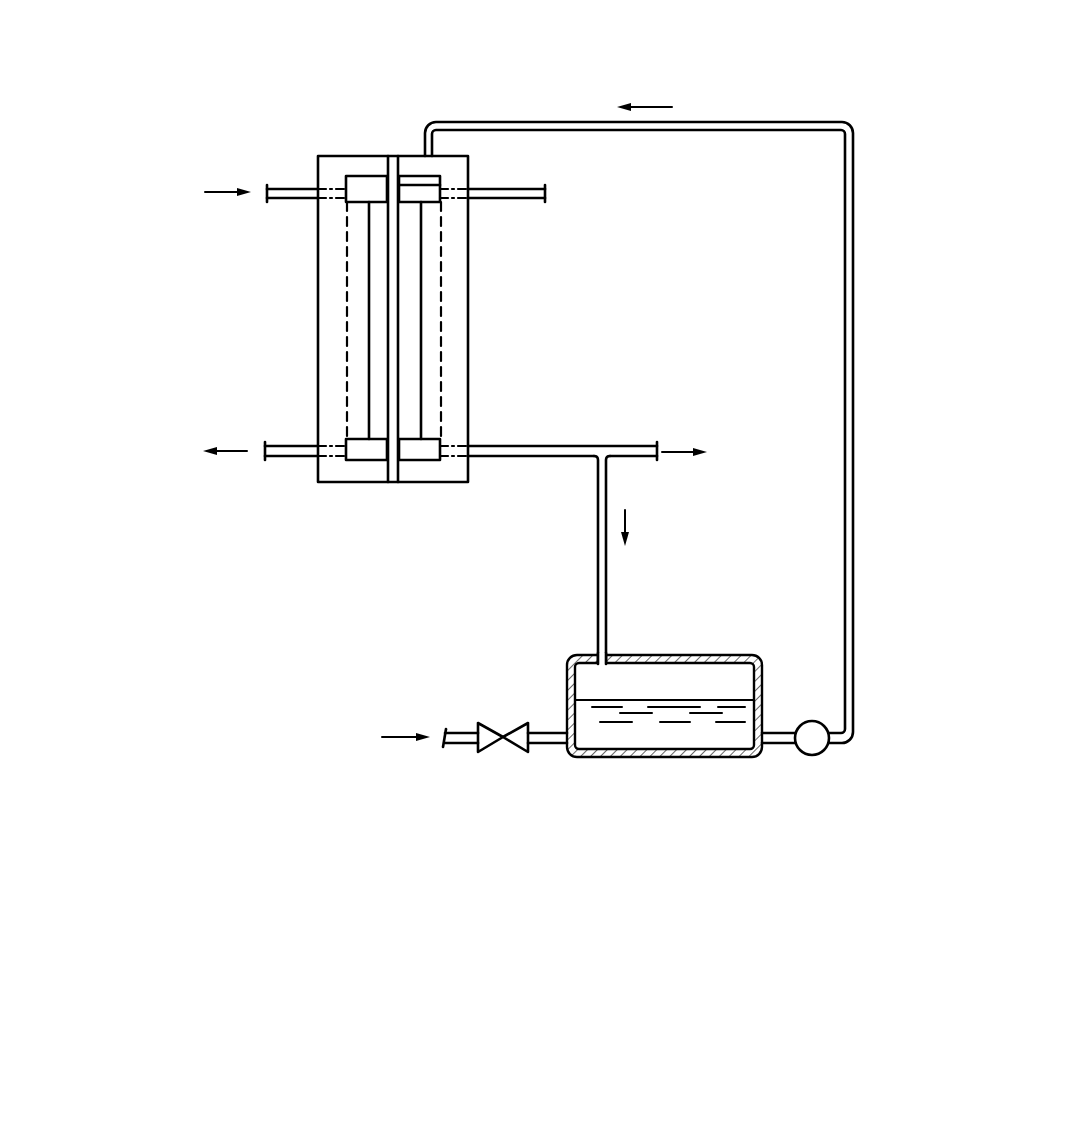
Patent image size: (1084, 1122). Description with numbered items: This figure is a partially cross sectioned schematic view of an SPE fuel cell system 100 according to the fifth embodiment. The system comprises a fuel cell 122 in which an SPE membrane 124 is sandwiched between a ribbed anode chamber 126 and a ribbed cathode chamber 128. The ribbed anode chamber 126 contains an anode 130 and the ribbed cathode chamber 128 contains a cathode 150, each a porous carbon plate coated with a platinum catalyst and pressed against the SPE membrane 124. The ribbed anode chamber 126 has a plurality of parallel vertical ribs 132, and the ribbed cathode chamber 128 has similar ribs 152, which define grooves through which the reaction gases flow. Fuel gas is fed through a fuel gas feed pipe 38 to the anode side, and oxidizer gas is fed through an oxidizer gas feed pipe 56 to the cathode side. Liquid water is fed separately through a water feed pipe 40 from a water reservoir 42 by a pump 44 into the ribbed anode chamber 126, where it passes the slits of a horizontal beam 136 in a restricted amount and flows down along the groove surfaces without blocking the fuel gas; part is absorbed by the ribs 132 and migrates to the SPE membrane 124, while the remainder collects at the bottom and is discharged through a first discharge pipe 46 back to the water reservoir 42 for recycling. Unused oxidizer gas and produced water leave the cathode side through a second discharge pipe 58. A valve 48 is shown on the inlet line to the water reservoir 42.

The SPE fuel cell system 100 is at (569, 98).
The water feed pipe 40 is at (738, 123).
The fuel cell 122 is at (280, 262).
The SPE membrane 124 is at (390, 156).
The horizontal beam 136 is at (412, 184).
The oxidizer gas feed pipe 56 is at (294, 188).
The fuel gas feed pipe 38 is at (510, 199).
The ribbed cathode chamber 128 is at (330, 300).
The ribbed anode chamber 126 is at (460, 278).
The cathode 150 is at (377, 322).
The anode 130 is at (408, 350).
The ribs of ribbed cathode chamber 152 is at (355, 387).
The ribs of ribbed anode chamber 132 is at (428, 377).
The second discharge pipe 58 is at (295, 458).
The first discharge pipe 46 is at (578, 447).
The water reservoir 42 is at (675, 757).
The pump 44 is at (820, 755).
The inlet valve 48 is at (497, 752).